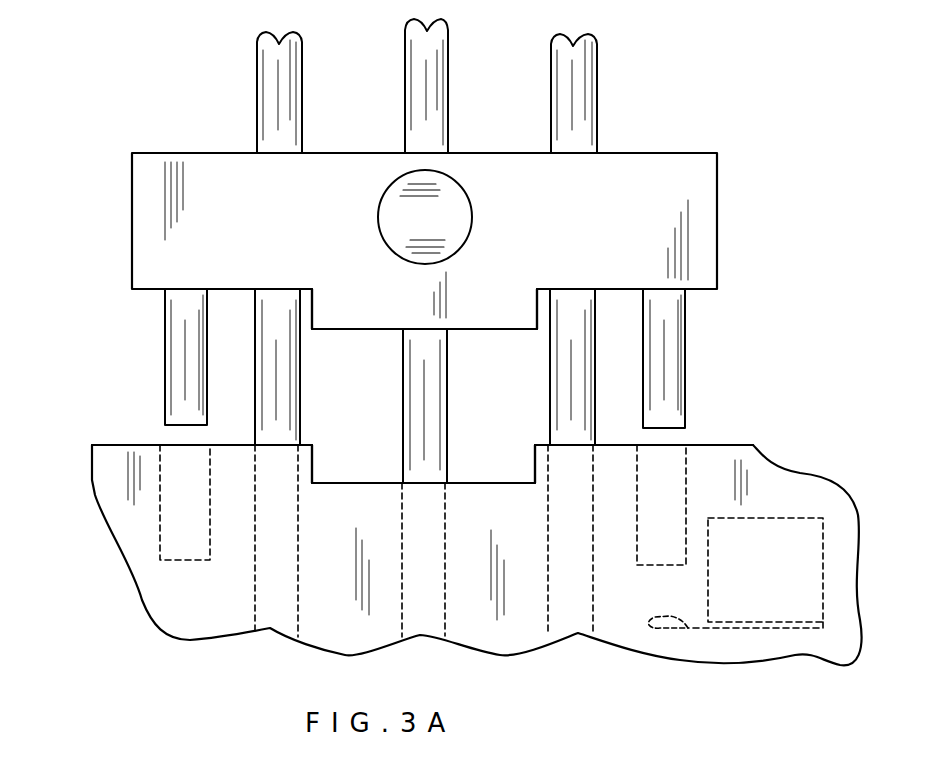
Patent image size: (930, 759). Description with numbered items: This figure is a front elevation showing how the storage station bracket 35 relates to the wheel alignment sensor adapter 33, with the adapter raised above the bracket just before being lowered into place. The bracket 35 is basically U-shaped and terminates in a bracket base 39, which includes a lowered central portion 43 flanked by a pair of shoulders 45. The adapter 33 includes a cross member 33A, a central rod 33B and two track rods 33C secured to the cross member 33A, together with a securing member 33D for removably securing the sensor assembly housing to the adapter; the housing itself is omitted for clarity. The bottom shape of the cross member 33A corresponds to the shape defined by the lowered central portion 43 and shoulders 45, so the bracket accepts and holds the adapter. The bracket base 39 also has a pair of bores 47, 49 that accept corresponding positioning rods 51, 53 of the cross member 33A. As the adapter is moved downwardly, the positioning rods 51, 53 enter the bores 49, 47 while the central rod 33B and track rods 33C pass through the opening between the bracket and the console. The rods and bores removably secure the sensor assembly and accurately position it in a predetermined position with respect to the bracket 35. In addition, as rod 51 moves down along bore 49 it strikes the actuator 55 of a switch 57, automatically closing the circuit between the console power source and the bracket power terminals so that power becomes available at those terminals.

The adapter 33 is at (122, 230).
The cross member 33A is at (400, 293).
The central rod 33B is at (405, 86).
The track rods 33C is at (257, 100).
The securing member 33D is at (447, 232).
The bracket 35 is at (100, 581).
The bracket base 39 is at (345, 566).
The lowered central portion 43 is at (357, 472).
The shoulders 45 is at (118, 435).
The bore 47 is at (160, 522).
The bore 49 is at (686, 467).
The positioning rod 51 is at (683, 350).
The positioning rod 53 is at (165, 350).
The actuator 55 is at (680, 627).
The switch 57 is at (783, 579).